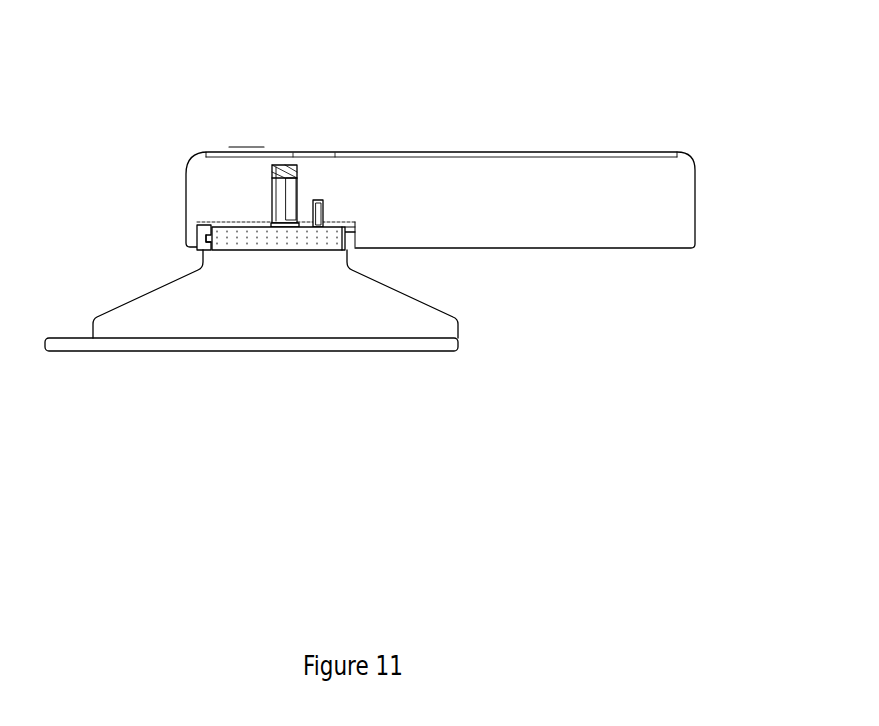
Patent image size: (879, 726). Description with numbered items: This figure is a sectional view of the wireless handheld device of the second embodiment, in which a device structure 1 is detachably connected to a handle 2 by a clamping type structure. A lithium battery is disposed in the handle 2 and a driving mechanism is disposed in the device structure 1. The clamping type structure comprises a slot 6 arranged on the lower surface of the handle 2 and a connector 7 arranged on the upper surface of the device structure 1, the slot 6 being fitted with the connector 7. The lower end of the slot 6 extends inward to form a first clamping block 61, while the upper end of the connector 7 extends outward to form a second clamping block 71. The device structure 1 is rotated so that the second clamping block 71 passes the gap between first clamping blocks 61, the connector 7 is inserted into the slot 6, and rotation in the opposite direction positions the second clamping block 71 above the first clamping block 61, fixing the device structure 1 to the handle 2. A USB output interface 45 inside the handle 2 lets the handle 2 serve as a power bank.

The device structure 1 is at (435, 326).
The handle 2 is at (567, 172).
The slot 6 is at (198, 235).
The first clamping block 61 is at (204, 243).
The connector 7 is at (315, 243).
The second clamping block 71 is at (352, 237).
The USB output interface 45 is at (283, 210).